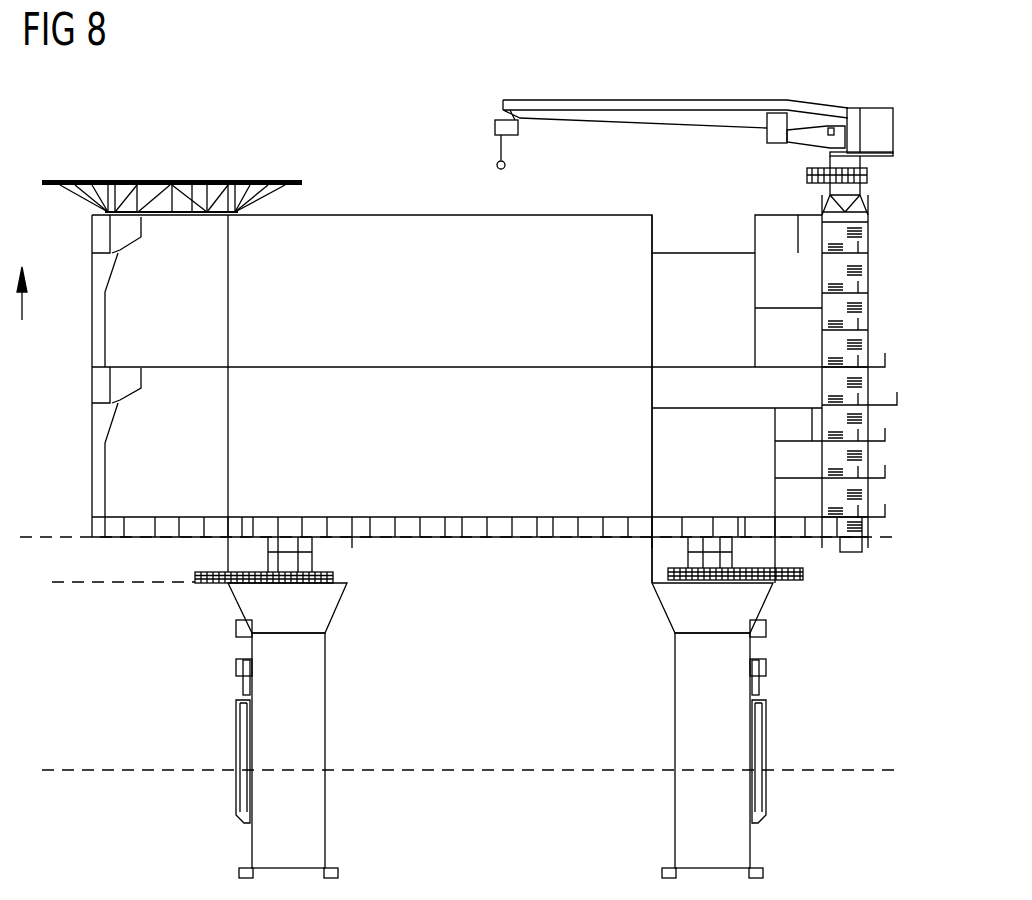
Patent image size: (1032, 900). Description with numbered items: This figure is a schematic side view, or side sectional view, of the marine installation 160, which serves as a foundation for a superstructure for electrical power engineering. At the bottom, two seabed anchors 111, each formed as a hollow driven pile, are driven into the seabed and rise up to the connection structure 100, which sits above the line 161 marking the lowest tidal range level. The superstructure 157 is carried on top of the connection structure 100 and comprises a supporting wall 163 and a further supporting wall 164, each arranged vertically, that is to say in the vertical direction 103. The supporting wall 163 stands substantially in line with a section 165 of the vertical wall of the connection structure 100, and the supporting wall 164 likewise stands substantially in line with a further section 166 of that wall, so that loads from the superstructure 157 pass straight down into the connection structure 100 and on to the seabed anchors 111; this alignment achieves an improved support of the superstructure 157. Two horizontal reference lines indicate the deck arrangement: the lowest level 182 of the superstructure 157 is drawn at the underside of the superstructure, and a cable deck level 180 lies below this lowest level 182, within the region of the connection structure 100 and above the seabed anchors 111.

The connection structure 100 is at (387, 565).
The vertical direction 103 is at (22, 308).
The seabed anchor 111 is at (358, 728).
The superstructure 157 is at (886, 304).
The installation 160 is at (844, 72).
The lowest tidal range level 161 is at (118, 768).
The supporting wall 163 is at (229, 291).
The supporting wall 164 is at (651, 294).
The section of the vertical wall 165 is at (228, 553).
The section of the vertical wall 166 is at (651, 553).
The cable deck level 180 is at (87, 585).
The lowest level 182 is at (40, 533).